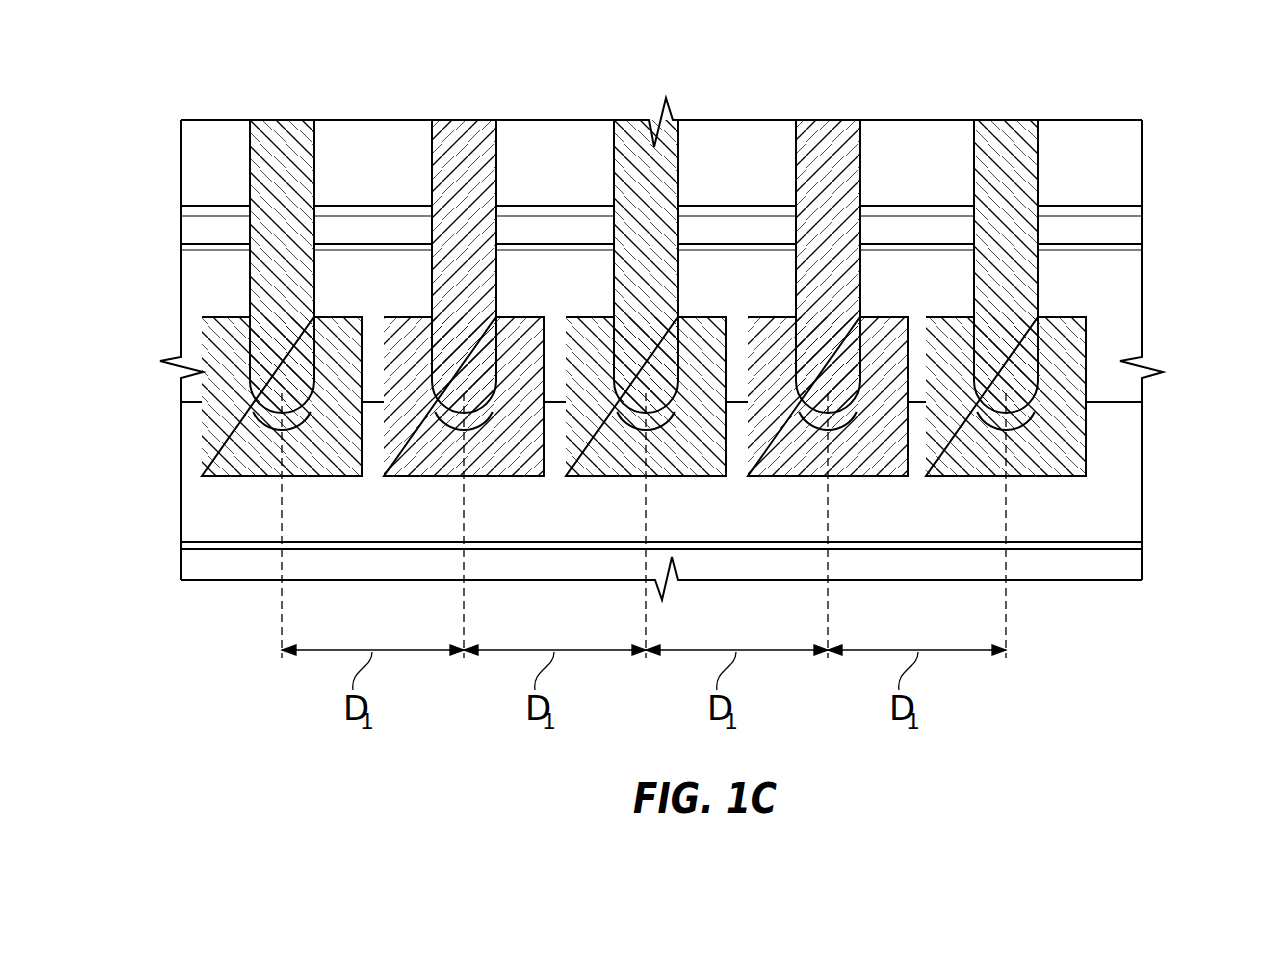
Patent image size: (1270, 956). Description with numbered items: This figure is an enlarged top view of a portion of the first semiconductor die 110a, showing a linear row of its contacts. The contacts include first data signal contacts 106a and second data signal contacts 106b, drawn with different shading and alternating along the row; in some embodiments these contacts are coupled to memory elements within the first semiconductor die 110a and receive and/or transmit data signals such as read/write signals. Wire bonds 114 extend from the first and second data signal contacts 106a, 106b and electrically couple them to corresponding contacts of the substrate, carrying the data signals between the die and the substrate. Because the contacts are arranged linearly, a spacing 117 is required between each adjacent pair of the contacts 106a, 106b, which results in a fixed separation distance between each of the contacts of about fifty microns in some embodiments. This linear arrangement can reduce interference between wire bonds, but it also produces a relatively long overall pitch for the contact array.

The first semiconductor die 110a is at (1115, 332).
The first data signal contacts 106a is at (533, 340).
The second data signal contacts 106b is at (340, 340).
The wire bonds 114 is at (288, 145).
The spacing 117 is at (373, 466).